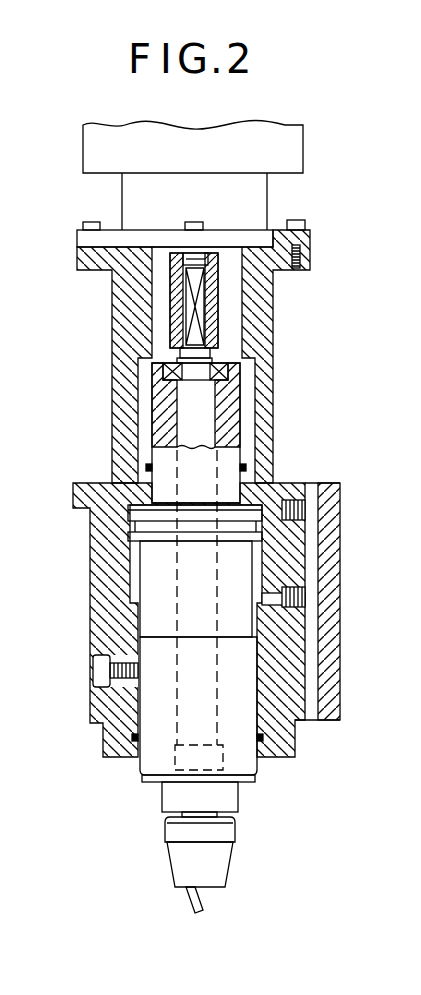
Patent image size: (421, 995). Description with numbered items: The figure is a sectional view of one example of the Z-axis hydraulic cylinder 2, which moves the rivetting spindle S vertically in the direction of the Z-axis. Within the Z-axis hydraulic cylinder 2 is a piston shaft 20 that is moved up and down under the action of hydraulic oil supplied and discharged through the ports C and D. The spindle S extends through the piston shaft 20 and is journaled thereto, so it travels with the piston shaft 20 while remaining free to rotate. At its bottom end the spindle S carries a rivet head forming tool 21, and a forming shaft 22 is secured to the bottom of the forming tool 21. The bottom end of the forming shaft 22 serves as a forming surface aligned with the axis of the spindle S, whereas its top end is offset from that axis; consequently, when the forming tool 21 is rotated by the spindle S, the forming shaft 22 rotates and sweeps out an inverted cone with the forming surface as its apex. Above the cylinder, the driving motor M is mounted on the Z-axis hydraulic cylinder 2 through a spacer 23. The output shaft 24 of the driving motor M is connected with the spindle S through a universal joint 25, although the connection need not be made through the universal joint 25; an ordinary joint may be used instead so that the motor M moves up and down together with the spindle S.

The driving motor M is at (288, 161).
The spacer 23 is at (118, 299).
The output shaft 24 is at (205, 250).
The universal joint 25 is at (223, 308).
The Z-axis hydraulic cylinder 2 is at (88, 628).
The port C is at (300, 504).
The port D is at (307, 598).
The piston shaft 20 is at (157, 564).
The spindle S is at (185, 703).
The rivet head forming tool 21 is at (168, 850).
The forming shaft 22 is at (185, 898).